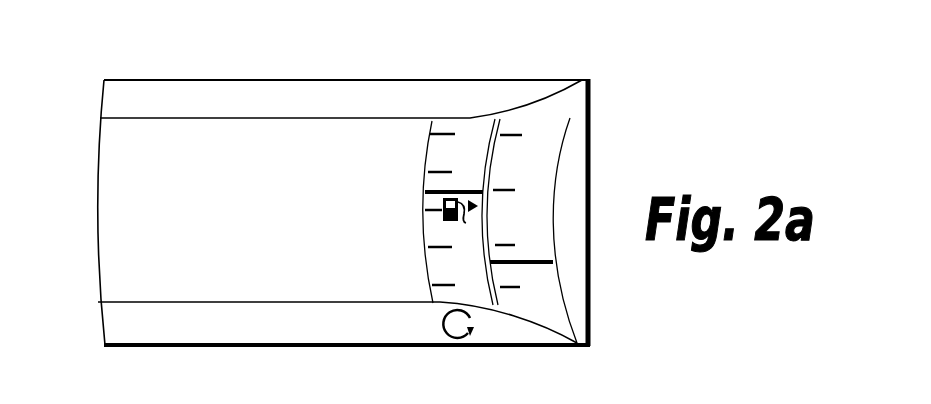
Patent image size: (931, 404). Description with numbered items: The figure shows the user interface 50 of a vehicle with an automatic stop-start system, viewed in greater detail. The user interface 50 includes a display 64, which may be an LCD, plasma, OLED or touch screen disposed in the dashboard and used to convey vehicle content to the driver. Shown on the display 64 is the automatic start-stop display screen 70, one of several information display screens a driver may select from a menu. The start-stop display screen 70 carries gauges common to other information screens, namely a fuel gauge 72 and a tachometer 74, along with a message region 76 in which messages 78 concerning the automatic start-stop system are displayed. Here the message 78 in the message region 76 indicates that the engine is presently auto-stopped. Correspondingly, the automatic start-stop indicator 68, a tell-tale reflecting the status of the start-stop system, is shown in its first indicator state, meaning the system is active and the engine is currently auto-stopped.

The user interface 50 is at (572, 42).
The display 64 is at (591, 110).
The automatic start-stop display screen 70 is at (347, 100).
The fuel gauge 72 is at (470, 248).
The tachometer 74 is at (525, 157).
The message region 76 is at (143, 158).
The message 78 is at (260, 248).
The automatic start-stop indicator 68 is at (475, 322).